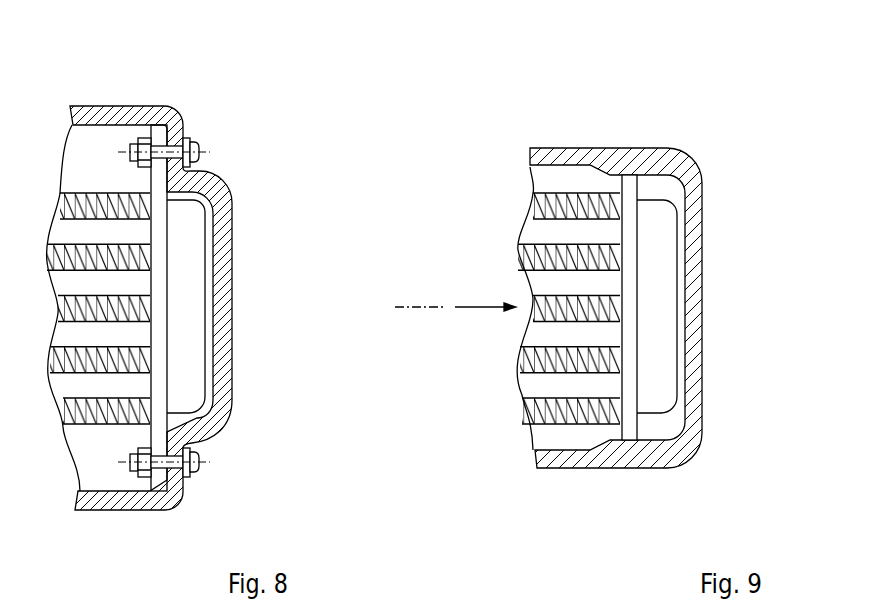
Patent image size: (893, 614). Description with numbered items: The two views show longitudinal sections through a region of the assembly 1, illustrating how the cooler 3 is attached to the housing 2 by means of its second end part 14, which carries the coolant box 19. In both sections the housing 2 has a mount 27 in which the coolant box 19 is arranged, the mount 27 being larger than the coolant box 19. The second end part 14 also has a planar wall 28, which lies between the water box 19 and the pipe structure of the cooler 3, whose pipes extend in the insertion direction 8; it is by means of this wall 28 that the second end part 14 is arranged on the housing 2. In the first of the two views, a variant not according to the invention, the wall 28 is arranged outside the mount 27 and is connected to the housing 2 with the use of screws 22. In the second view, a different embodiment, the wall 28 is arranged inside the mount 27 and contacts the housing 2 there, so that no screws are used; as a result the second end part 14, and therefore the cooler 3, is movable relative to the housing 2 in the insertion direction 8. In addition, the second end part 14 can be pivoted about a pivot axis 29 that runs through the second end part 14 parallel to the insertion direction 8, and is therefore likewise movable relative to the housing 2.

In FIG. 8, the assembly 1 is at (180, 258).
In FIG. 9, the assembly 1 is at (578, 236).
In FIG. 8, the housing 2 is at (122, 95).
In FIG. 9, the housing 2 is at (605, 140).
In FIG. 8, the cooler 3 is at (86, 192).
In FIG. 9, the cooler 3 is at (556, 192).
In FIG. 9, the insertion direction 8 is at (468, 305).
In FIG. 8, the second end part 14 is at (208, 297).
In FIG. 9, the second end part 14 is at (680, 297).
In FIG. 8, the coolant box 19 is at (192, 333).
In FIG. 9, the coolant box 19 is at (662, 332).
In FIG. 8, the screws 22 is at (193, 139).
In FIG. 8, the mount 27 is at (175, 268).
In FIG. 9, the mount 27 is at (637, 268).
In FIG. 8, the planar wall 28 is at (158, 370).
In FIG. 9, the planar wall 28 is at (627, 370).
In FIG. 9, the pivot axis 29 is at (418, 305).